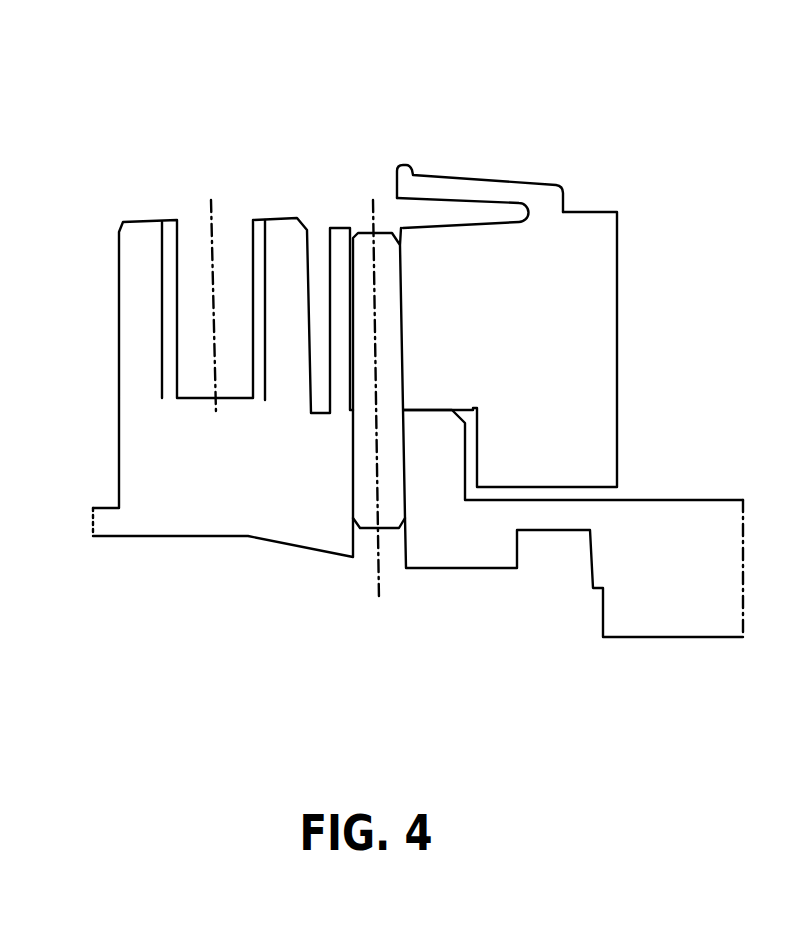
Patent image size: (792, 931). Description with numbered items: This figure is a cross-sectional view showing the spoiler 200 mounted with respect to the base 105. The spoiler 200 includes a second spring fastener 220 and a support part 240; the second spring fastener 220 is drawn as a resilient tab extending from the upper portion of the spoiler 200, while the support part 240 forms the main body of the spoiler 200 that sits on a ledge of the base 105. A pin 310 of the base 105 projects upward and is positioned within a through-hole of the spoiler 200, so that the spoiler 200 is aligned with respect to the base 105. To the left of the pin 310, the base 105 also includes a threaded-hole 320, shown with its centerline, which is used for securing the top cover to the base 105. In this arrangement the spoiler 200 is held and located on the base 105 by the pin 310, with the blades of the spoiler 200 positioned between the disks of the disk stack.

The base 105 is at (467, 532).
The spoiler 200 is at (607, 268).
The second spring fastener 220 is at (540, 217).
The support part 240 is at (573, 410).
The pin 310 is at (372, 228).
The threaded-hole 320 is at (232, 307).